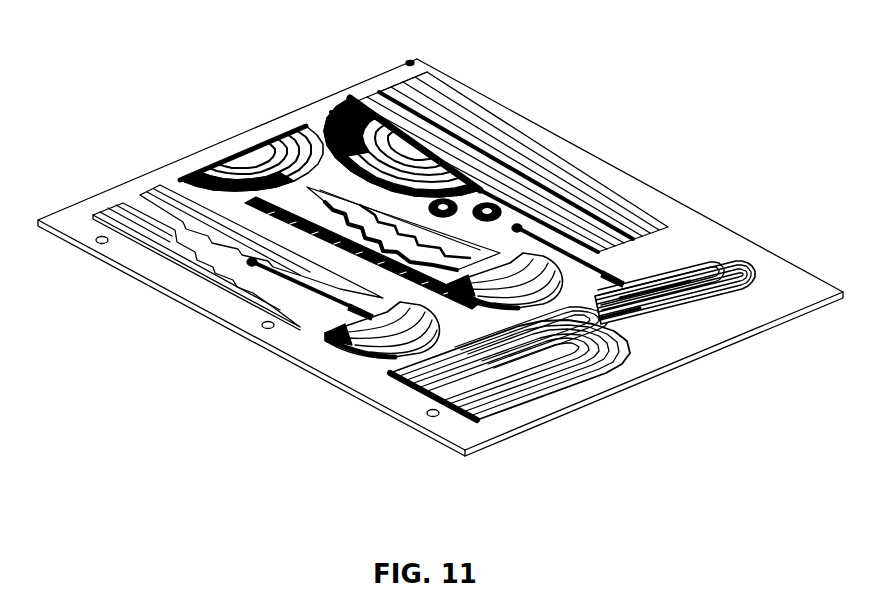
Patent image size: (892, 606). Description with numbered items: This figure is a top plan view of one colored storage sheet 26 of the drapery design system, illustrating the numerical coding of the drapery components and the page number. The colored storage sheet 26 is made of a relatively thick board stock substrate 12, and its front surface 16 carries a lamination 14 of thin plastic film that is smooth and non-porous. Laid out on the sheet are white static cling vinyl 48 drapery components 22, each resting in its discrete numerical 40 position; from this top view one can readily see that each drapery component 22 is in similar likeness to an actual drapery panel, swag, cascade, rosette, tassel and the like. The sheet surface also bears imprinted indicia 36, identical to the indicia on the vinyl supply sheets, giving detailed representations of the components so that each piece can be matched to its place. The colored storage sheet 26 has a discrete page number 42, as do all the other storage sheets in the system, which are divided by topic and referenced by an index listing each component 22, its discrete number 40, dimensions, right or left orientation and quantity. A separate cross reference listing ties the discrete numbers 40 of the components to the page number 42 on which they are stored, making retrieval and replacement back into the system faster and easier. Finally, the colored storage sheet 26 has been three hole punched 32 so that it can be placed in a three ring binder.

The board stock substrate 12 is at (743, 336).
The lamination 14 is at (363, 395).
The front surface 16 is at (783, 287).
The drapery component 22 is at (556, 368).
The colored storage sheet 26 is at (97, 193).
The three hole punch 32 is at (260, 326).
The imprinted indicia 36 is at (345, 346).
The discrete number 40 is at (482, 415).
The page number 42 is at (418, 58).
The static cling vinyl 48 is at (508, 138).